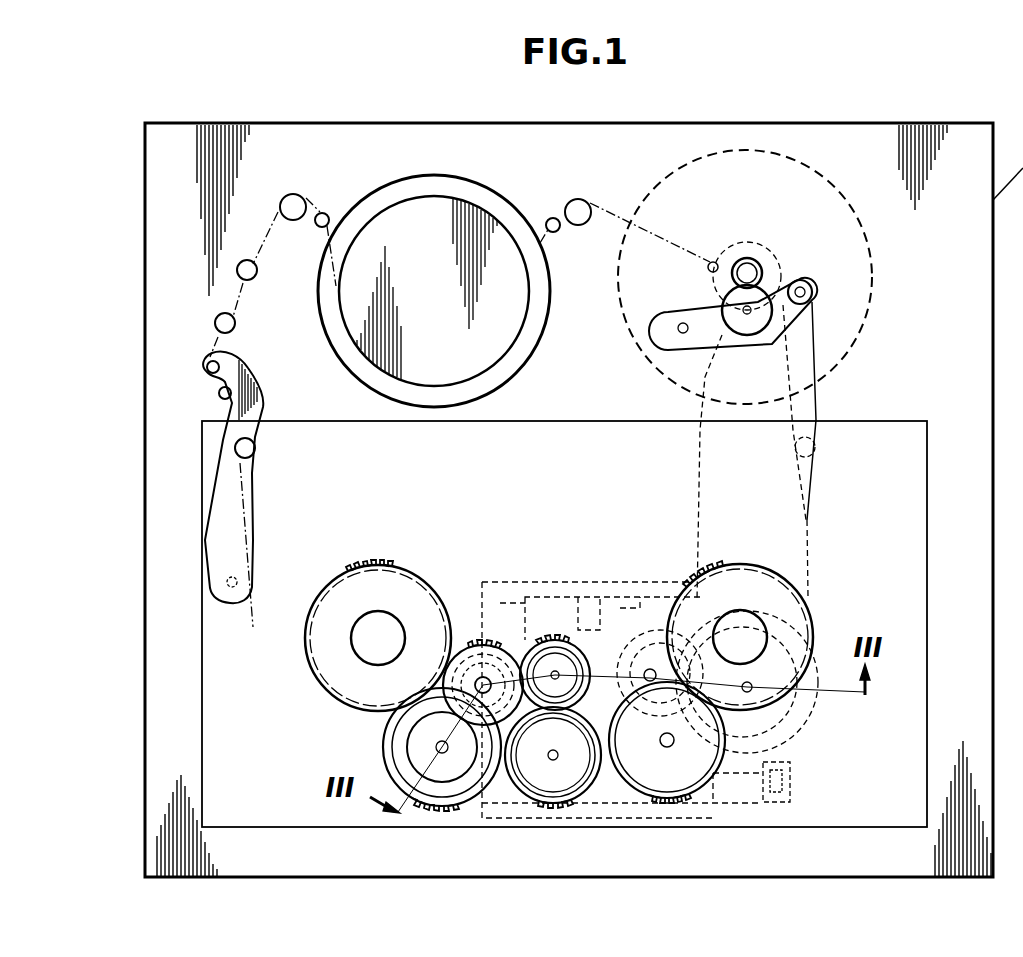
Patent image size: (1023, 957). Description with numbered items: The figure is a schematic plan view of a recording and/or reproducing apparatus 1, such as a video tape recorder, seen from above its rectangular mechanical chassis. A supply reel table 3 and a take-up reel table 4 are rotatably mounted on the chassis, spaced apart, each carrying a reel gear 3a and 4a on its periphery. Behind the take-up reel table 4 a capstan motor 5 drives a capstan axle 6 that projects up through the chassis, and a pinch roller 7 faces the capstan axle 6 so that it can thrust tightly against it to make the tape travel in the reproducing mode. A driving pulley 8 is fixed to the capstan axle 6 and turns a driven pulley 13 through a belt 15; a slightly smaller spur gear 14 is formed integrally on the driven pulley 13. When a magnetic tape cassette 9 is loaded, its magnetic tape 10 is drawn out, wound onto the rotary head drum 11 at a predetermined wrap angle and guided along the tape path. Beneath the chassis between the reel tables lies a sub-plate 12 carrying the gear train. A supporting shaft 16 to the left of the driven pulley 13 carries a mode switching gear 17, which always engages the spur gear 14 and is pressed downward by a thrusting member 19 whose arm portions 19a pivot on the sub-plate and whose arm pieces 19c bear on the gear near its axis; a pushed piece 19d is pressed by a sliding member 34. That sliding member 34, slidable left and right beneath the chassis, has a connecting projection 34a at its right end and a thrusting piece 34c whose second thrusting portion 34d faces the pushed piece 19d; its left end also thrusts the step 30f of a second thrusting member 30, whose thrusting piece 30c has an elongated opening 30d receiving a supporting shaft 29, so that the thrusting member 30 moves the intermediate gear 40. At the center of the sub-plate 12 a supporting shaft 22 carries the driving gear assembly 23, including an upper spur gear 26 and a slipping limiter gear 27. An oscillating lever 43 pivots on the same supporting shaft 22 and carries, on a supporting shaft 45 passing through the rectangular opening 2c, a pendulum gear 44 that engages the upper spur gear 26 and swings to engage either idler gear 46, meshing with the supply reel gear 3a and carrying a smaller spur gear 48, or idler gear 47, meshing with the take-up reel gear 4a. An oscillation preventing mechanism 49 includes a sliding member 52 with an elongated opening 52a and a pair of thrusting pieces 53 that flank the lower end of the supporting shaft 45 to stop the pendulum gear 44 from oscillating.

The recording and/or reproducing apparatus 1 is at (95, 178).
The rectangular opening 2c is at (523, 805).
The supply reel table 3 is at (330, 690).
The supply reel gear 3a is at (352, 645).
The take-up reel table 4 is at (810, 590).
The take-up reel gear 4a is at (810, 622).
The capstan motor 5 is at (872, 240).
The capstan axle 6 is at (747, 258).
The pinch roller 7 is at (748, 325).
The driving pulley 8 is at (780, 250).
The magnetic tape cassette 9 is at (929, 490).
The magnetic tape 10 is at (611, 210).
The rotary head drum 11 is at (465, 207).
The sub-plate 12 is at (667, 822).
The driven pulley 13 is at (815, 708).
The spur gear 14 is at (790, 716).
The belt 15 is at (808, 533).
The supporting shaft 16 is at (657, 630).
The mode switching gear 17 is at (668, 600).
The thrusting member 19 is at (633, 630).
The arm portions 19a is at (636, 752).
The arm pieces 19c is at (668, 707).
The pushed piece 19d is at (608, 630).
The supporting shaft 22 is at (555, 672).
The driving gear assembly 23 is at (548, 637).
The upper spur gear 26 is at (533, 630).
The limiter gear 27 is at (493, 630).
The supporting shaft 29 is at (470, 648).
The thrusting member 30 is at (476, 630).
The thrusting piece 30c is at (445, 655).
The elongated through opening 30d is at (462, 658).
The step 30f is at (503, 630).
The sliding member 34 is at (560, 603).
The connecting projection 34a is at (723, 573).
The thrusting piece 34c is at (568, 597).
The second thrusting portion 34d is at (607, 623).
The intermediate gear 40 is at (480, 642).
The oscillating lever 43 is at (550, 783).
The pendulum gear 44 is at (587, 790).
The supporting shaft 45 is at (557, 767).
The idler gear 46 is at (433, 797).
The idler gear 47 is at (705, 795).
The spur gear 48 is at (452, 783).
The oscillation preventing mechanism 49 is at (502, 805).
The sliding member 52 is at (748, 805).
The elongated opening 52a is at (792, 785).
The thrusting pieces 53 is at (613, 770).